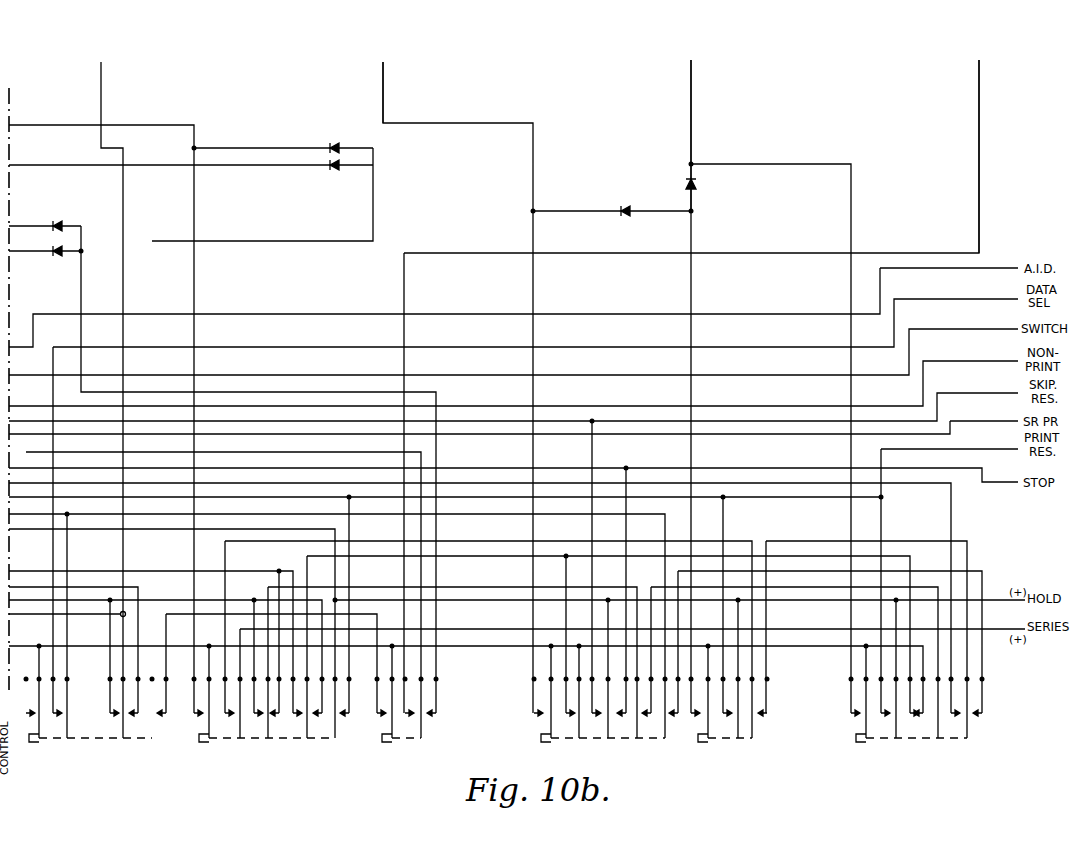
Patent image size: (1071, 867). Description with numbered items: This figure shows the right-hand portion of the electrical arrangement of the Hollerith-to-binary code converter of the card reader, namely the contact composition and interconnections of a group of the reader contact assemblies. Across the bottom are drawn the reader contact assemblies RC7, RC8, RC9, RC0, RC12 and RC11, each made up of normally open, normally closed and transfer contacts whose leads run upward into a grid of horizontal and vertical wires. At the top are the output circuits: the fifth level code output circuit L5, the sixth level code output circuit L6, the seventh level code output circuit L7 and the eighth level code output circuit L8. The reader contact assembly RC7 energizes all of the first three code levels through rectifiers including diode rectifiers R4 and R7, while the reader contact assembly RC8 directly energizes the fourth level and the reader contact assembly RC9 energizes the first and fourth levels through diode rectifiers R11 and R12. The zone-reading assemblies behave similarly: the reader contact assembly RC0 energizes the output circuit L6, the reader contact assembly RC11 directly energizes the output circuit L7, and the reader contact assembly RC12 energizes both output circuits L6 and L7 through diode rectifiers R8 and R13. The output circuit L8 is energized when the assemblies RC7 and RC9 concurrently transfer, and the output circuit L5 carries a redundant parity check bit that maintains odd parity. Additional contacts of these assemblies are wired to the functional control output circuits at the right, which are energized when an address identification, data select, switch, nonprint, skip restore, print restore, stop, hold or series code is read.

The fifth level code output circuit L5 is at (101, 378).
The sixth level code output circuit L6 is at (381, 70).
The seventh level code output circuit L7 is at (687, 91).
The eighth level code output circuit L8 is at (967, 135).
The diode rectifier R4 is at (45, 219).
The diode rectifier R7 is at (46, 260).
The diode rectifier R8 is at (703, 187).
The diode rectifier R11 is at (191, 173).
The diode rectifier R12 is at (283, 139).
The diode rectifier R13 is at (612, 220).
The reader contact assembly RC7 is at (96, 723).
The reader contact assembly RC8 is at (272, 723).
The reader contact assembly RC9 is at (407, 723).
The reader contact assembly RC0 is at (606, 723).
The reader contact assembly RC12 is at (729, 723).
The reader contact assembly RC11 is at (917, 723).